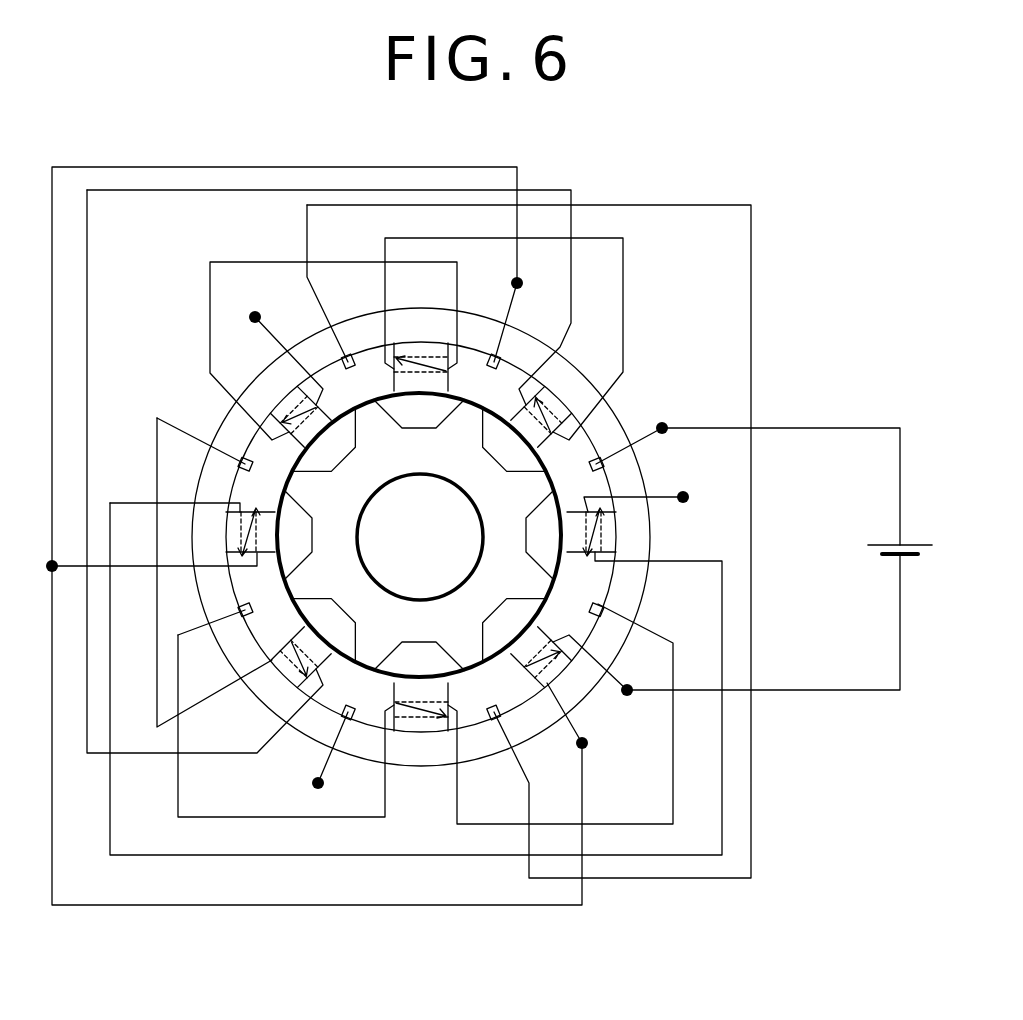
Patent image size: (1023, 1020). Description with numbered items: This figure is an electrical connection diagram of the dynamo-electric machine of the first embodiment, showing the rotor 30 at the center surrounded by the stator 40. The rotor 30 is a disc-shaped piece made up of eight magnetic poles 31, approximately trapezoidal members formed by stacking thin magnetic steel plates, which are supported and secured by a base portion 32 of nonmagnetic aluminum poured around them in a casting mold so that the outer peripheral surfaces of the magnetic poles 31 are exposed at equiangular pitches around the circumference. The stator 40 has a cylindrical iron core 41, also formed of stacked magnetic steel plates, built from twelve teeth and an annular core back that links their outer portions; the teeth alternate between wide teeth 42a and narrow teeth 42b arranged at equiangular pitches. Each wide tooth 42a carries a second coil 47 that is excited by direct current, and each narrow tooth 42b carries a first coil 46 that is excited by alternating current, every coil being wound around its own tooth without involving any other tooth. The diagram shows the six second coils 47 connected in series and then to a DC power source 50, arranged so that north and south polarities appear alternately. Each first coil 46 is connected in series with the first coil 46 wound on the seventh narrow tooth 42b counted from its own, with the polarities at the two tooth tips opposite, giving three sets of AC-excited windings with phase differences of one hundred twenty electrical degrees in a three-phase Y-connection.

The rotor 30 is at (419, 535).
The magnetic pole 31 is at (510, 448).
The base portion 32 is at (507, 513).
The stator 40 is at (250, 365).
The iron core 41 is at (210, 418).
The wide tooth 42a is at (600, 461).
The narrow tooth 42b is at (503, 365).
The first coil 46 is at (552, 347).
The second coil 47 is at (573, 448).
The DC power source 50 is at (935, 548).